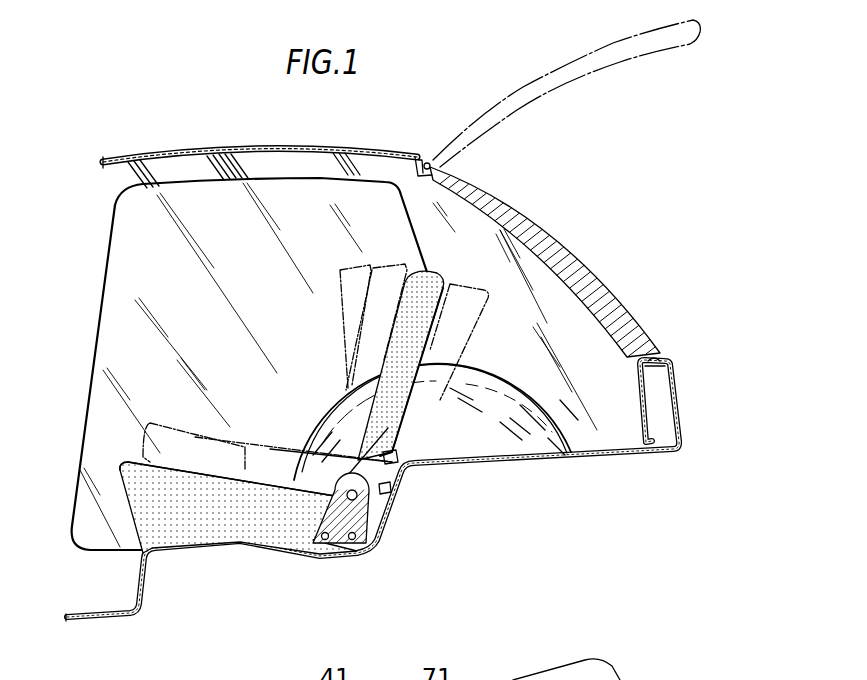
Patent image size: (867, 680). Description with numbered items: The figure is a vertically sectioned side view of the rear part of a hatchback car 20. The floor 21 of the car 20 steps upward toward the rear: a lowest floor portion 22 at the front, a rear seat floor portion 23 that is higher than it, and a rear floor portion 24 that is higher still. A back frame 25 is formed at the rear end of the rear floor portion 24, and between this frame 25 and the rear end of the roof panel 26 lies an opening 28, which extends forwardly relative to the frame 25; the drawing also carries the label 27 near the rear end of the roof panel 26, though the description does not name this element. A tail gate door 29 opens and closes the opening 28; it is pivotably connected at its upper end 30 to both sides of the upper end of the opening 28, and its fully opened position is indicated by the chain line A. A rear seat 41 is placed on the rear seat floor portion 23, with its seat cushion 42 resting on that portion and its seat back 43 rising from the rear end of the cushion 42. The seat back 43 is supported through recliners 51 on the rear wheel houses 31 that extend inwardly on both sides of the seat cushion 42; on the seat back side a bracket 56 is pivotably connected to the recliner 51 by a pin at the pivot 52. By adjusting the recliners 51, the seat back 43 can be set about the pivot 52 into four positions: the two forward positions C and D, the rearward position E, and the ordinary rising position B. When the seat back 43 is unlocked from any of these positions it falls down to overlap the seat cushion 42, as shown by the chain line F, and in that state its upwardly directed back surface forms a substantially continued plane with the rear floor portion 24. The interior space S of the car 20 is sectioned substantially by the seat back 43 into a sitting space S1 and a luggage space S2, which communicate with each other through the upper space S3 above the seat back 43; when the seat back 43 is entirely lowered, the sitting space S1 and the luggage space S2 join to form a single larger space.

The car 20 is at (92, 325).
The floor 21 is at (86, 625).
The lowest floor portion 22 is at (115, 620).
The rear seat floor portion 23 is at (241, 545).
The rear floor portion 24 is at (490, 457).
The back frame 25 is at (681, 400).
The roof panel 26 is at (323, 149).
The roof rail 27 is at (421, 175).
The opening 28 is at (658, 357).
The tail gate door 29 is at (540, 231).
The upper end 30 is at (434, 161).
The rear wheel houses 31 is at (320, 428).
The rear seat 41 is at (242, 465).
The seat cushion 42 is at (197, 525).
The seat back 43 is at (438, 410).
The recliner 51 is at (338, 545).
The pivot 52 is at (358, 496).
The bracket 56 is at (395, 478).
The chain line A is at (523, 86).
The ordinary rising position B is at (440, 275).
The forward position C is at (393, 266).
The forward position D is at (348, 264).
The rearward position E is at (483, 308).
The chain line F is at (172, 420).
The interior space S is at (302, 218).
The sitting space S1 is at (223, 218).
The luggage space S2 is at (577, 329).
The upper space S3 is at (455, 223).